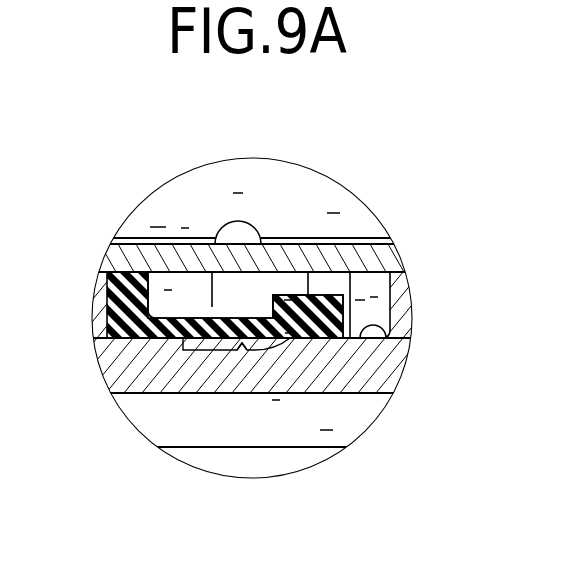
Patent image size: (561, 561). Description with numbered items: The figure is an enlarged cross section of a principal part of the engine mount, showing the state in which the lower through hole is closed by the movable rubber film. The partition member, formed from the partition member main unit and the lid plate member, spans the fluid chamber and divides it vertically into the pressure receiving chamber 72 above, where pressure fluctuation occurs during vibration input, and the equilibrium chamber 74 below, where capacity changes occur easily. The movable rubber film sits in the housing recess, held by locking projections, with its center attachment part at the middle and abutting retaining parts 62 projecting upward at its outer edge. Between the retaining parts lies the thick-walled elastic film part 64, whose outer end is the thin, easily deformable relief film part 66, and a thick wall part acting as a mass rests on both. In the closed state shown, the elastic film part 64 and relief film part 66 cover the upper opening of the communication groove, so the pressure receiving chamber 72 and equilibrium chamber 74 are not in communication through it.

The abutting retaining part 62 is at (340, 285).
The elastic film part 64 is at (219, 336).
The relief film part 66 is at (305, 326).
The pressure receiving chamber 72 is at (298, 214).
The equilibrium chamber 74 is at (326, 431).